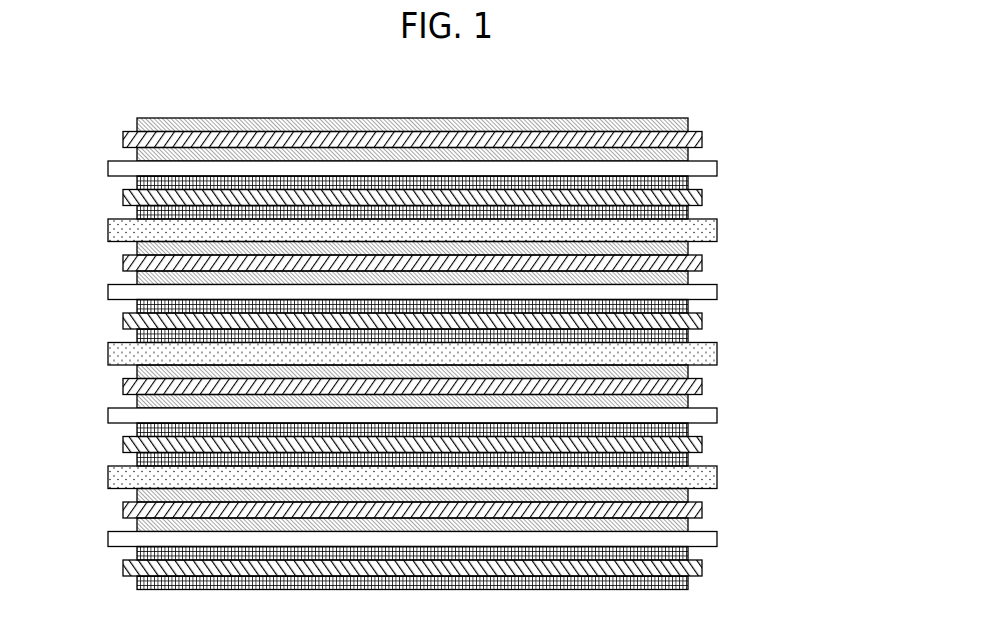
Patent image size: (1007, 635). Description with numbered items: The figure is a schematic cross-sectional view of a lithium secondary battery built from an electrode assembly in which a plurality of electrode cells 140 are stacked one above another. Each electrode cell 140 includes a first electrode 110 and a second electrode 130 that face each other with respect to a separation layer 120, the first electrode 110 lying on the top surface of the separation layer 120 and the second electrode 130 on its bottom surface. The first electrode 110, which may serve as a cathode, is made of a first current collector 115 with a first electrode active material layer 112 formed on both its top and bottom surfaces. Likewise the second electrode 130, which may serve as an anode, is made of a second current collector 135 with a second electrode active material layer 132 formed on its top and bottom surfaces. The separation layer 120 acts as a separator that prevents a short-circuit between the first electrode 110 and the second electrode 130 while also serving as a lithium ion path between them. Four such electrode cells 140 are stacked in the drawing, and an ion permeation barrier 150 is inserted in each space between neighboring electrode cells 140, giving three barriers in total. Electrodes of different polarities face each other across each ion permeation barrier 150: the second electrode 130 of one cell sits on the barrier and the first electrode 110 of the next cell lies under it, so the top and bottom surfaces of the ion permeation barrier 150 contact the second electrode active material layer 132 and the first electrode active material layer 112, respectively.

The first electrode 110 is at (777, 110).
The first electrode active material layer 112 is at (690, 125).
The first current collector 115 is at (704, 141).
The separation layer 120 is at (107, 169).
The second electrode 130 is at (777, 170).
The second electrode active material layer 132 is at (690, 184).
The second current collector 135 is at (704, 199).
The electrode cell 140 is at (731, 593).
The ion permeation barrier 150 is at (107, 234).